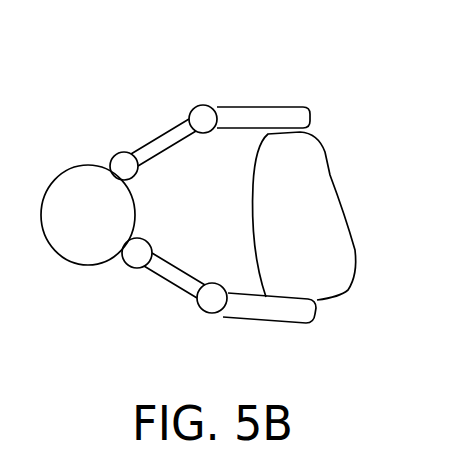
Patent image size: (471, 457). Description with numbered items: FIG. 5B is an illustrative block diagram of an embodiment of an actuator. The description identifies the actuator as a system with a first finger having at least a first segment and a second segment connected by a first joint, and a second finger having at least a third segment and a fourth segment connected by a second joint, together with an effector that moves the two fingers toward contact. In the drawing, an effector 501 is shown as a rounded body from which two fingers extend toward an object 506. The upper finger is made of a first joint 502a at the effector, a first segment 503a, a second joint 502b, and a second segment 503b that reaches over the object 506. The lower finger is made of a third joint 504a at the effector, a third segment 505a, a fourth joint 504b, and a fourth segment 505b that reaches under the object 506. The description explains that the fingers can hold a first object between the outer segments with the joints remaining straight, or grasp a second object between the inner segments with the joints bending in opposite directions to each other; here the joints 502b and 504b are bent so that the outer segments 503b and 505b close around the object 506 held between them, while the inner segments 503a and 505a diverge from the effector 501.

The body 501 is at (72, 164).
The first joint 502a is at (120, 152).
The second joint 502b is at (208, 104).
The first link 503a is at (165, 129).
The second link 503b is at (270, 107).
The third joint 504a is at (132, 272).
The fourth joint 504b is at (209, 318).
The third link 505a is at (177, 295).
The fourth link 505b is at (267, 328).
The object 506 is at (328, 167).